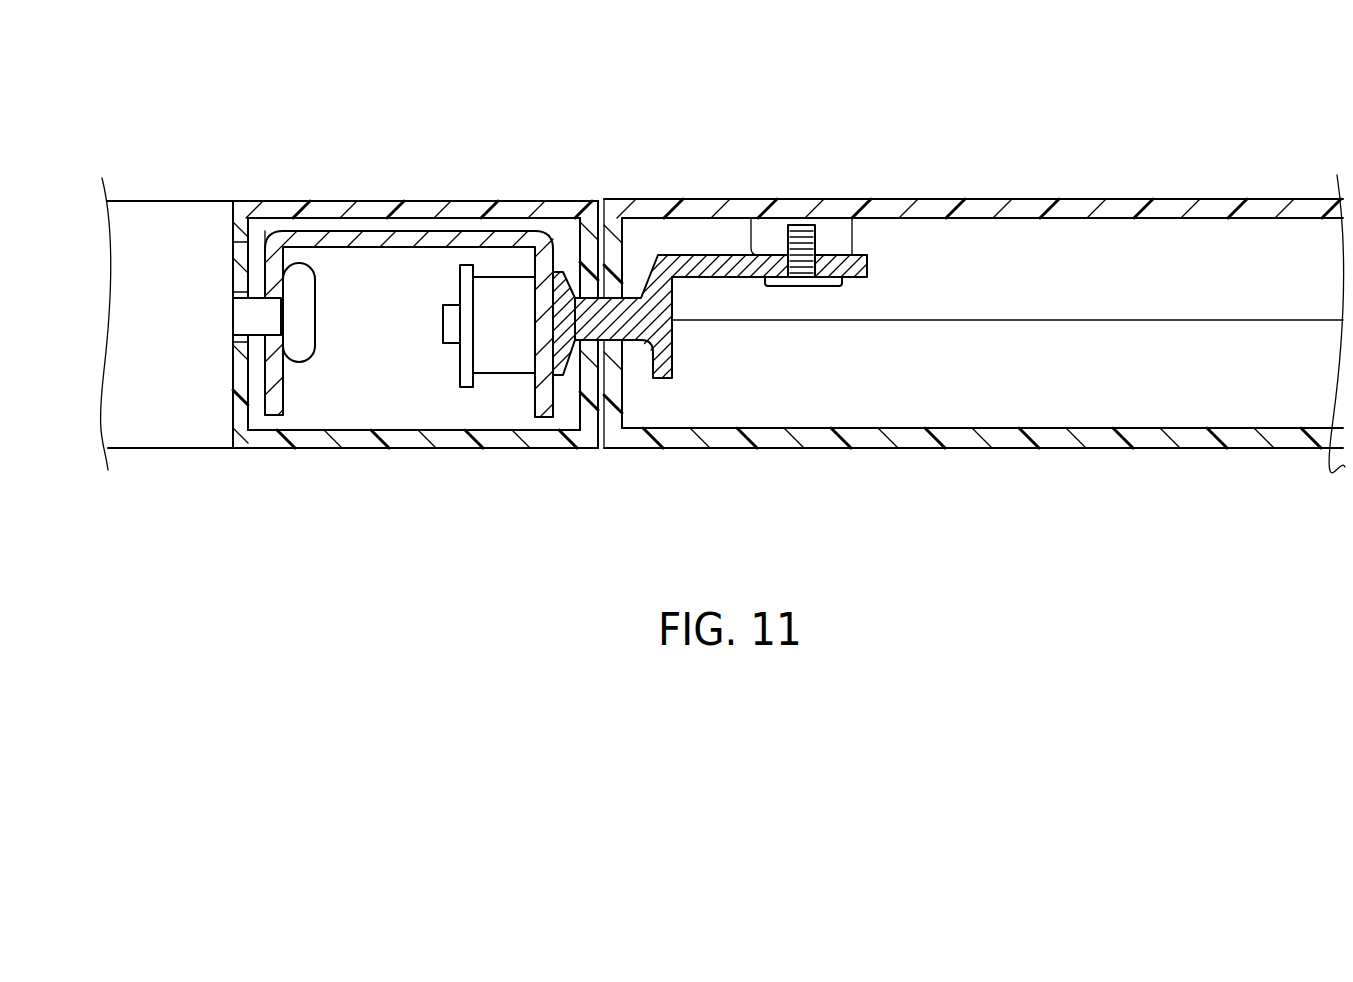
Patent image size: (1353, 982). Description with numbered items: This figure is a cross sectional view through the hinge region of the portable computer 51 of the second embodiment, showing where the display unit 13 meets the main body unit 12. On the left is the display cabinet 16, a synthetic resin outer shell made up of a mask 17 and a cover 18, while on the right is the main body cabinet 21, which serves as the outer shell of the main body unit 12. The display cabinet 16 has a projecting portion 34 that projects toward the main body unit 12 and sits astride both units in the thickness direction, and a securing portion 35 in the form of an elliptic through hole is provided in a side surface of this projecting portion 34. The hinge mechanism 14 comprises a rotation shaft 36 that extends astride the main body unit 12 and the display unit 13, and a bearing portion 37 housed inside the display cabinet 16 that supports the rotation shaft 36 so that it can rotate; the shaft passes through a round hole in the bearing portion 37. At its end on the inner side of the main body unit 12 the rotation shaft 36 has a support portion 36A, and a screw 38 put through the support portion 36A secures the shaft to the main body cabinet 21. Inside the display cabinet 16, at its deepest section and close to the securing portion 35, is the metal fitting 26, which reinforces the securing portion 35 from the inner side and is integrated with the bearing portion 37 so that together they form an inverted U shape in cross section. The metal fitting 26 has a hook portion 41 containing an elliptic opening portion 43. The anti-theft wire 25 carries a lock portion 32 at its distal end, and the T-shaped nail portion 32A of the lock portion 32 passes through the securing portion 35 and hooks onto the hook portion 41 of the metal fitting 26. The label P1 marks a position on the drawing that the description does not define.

The main body unit 12 is at (974, 277).
The display unit 13 is at (382, 303).
The hinge mechanism 14 is at (568, 248).
The display cabinet 16 is at (393, 450).
The mask 17 is at (540, 438).
The cover 18 is at (513, 202).
The main body cabinet 21 is at (1062, 448).
The anti-theft wire 25 is at (139, 300).
The metal fitting 26 is at (254, 403).
The lock portion 32 is at (118, 262).
The nail portion 32A is at (318, 300).
The projecting portion 34 is at (570, 450).
The securing portion 35 is at (240, 348).
The rotation shaft 36 is at (721, 259).
The support portion 36A is at (717, 254).
The bearing portion 37 is at (533, 388).
The screw 38 is at (823, 286).
The hook portion 41 is at (273, 382).
The opening portion 43 is at (399, 329).
The portable computer 51 is at (863, 123).
The position P1 is at (315, 137).